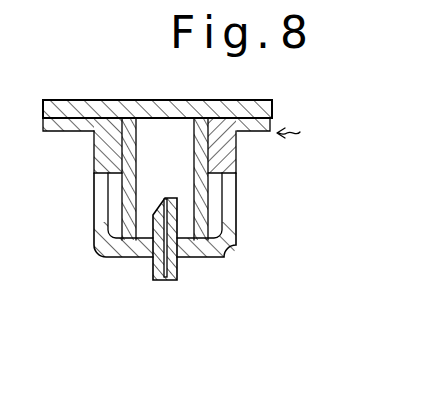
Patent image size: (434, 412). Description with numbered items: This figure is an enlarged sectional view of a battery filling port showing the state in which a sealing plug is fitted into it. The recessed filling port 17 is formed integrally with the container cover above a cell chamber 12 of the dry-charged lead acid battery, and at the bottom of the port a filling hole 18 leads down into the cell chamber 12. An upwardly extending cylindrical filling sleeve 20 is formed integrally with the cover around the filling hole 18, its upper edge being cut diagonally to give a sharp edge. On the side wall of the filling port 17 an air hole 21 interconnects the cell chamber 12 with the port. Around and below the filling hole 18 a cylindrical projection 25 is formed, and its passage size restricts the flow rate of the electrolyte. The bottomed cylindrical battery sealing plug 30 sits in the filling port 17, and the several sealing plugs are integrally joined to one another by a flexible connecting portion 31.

The cell chamber 12 is at (175, 349).
The filling port 17 is at (188, 130).
The filling hole 18 is at (163, 282).
The filling sleeve 20 is at (151, 215).
The air hole 21 is at (94, 205).
The cylindrical projection 25 is at (176, 268).
The battery sealing plug 30 is at (127, 152).
The flexible connecting portion 31 is at (65, 107).